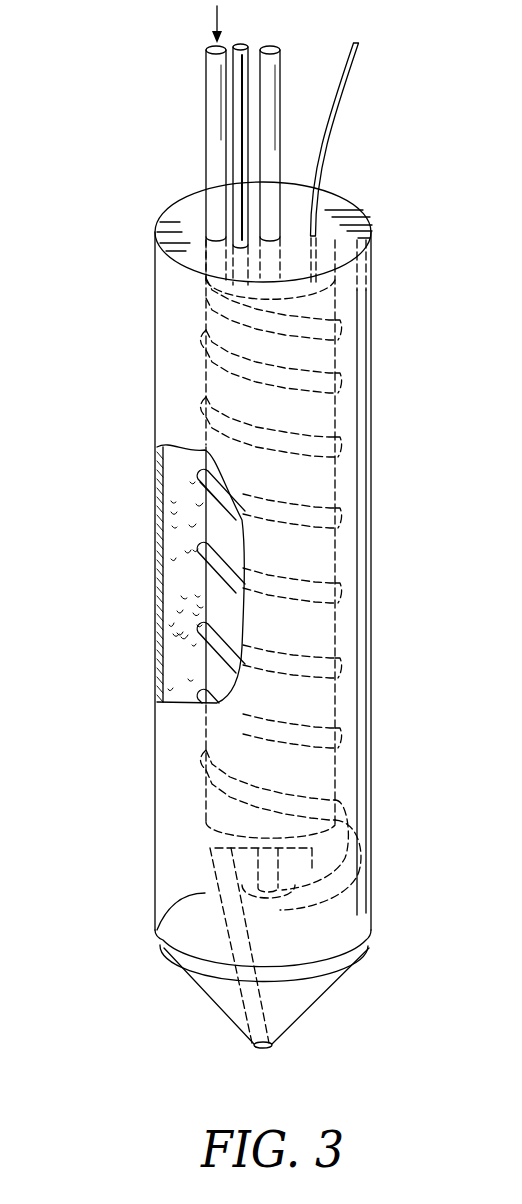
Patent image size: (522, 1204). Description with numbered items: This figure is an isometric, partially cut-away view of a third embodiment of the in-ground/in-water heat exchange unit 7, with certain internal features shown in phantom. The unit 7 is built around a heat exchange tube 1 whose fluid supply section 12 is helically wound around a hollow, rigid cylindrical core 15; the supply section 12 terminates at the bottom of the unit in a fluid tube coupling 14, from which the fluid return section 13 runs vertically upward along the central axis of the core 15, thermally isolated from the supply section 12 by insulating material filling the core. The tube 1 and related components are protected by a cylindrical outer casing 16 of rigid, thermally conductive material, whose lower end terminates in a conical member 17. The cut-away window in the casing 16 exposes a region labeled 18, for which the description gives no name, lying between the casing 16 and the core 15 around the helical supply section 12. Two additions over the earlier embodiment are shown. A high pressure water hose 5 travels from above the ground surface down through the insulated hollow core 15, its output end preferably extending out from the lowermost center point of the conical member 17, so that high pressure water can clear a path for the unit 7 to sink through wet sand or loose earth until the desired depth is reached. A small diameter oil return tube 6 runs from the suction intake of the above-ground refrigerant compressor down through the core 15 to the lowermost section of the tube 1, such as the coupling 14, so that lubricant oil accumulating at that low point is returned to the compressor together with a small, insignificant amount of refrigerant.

The heat exchange tube 1 is at (197, 136).
The high pressure water hose 5 is at (248, 60).
The small diameter oil return tube 6 is at (338, 98).
The heat exchange unit 7 is at (372, 580).
The fluid supply section 12 is at (210, 88).
The fluid return section 13 is at (272, 90).
The fluid tube coupling 14 is at (252, 906).
The hollow rigid cylindrical core 15 is at (222, 600).
The cylindrical outer casing 16 is at (168, 414).
The conical member 17 is at (300, 1000).
The packing material 18 is at (165, 548).